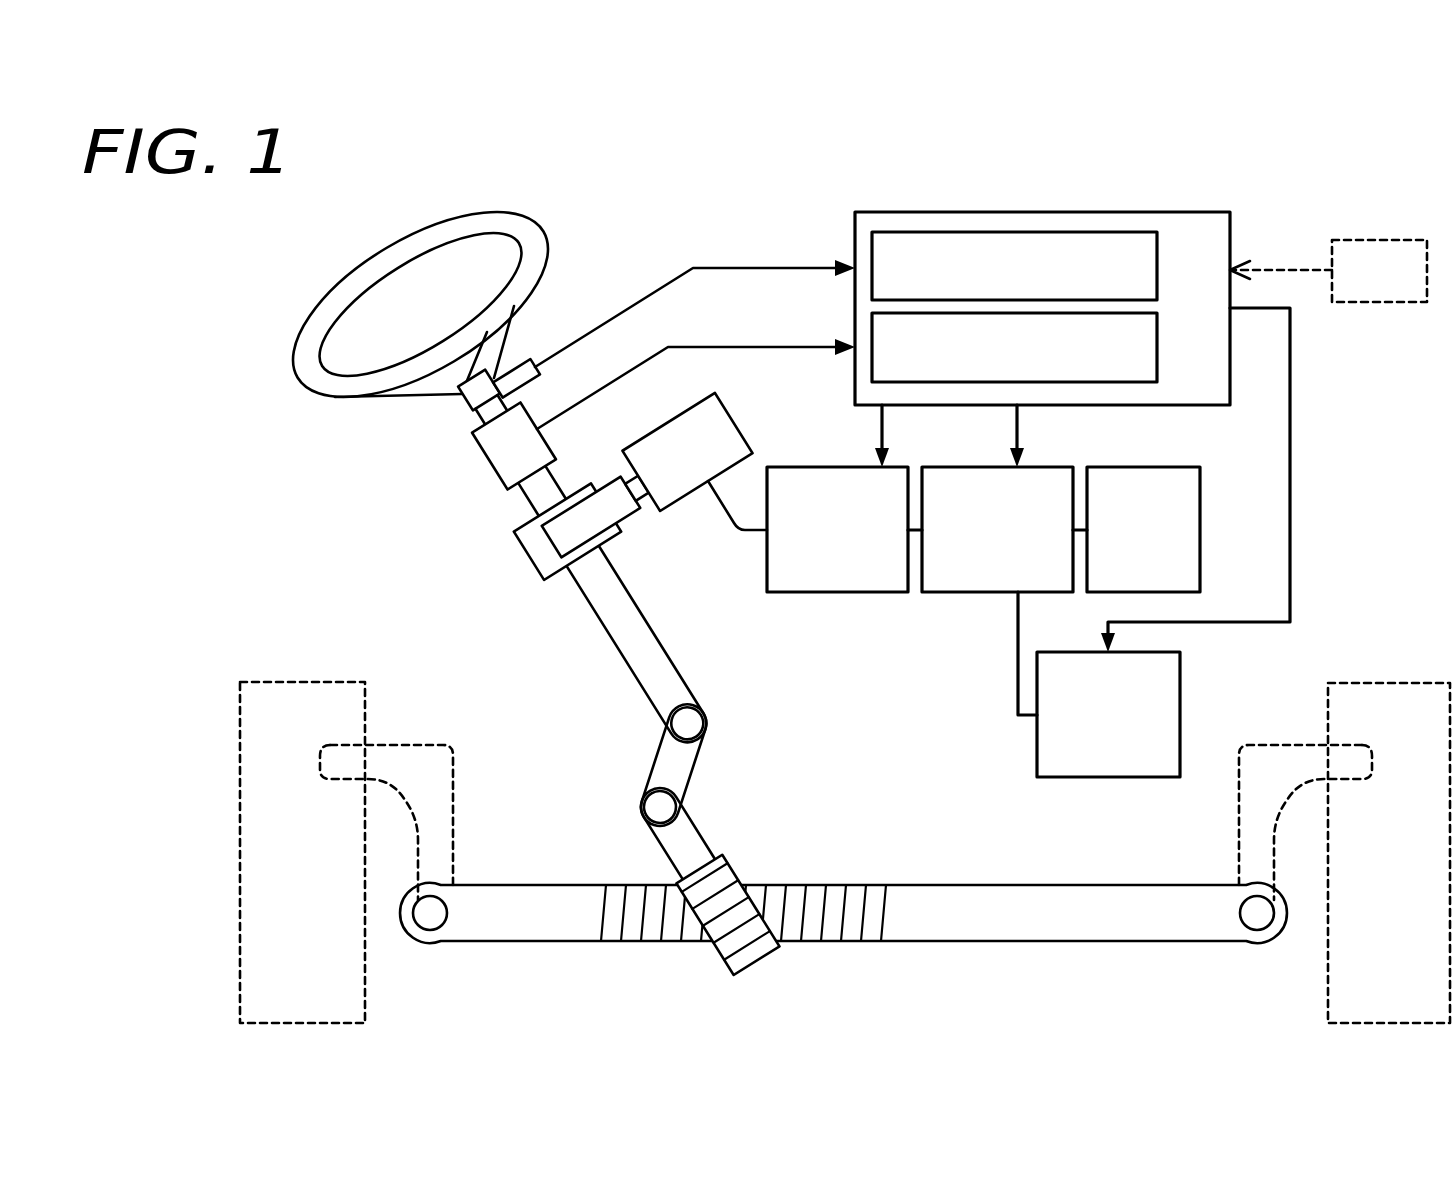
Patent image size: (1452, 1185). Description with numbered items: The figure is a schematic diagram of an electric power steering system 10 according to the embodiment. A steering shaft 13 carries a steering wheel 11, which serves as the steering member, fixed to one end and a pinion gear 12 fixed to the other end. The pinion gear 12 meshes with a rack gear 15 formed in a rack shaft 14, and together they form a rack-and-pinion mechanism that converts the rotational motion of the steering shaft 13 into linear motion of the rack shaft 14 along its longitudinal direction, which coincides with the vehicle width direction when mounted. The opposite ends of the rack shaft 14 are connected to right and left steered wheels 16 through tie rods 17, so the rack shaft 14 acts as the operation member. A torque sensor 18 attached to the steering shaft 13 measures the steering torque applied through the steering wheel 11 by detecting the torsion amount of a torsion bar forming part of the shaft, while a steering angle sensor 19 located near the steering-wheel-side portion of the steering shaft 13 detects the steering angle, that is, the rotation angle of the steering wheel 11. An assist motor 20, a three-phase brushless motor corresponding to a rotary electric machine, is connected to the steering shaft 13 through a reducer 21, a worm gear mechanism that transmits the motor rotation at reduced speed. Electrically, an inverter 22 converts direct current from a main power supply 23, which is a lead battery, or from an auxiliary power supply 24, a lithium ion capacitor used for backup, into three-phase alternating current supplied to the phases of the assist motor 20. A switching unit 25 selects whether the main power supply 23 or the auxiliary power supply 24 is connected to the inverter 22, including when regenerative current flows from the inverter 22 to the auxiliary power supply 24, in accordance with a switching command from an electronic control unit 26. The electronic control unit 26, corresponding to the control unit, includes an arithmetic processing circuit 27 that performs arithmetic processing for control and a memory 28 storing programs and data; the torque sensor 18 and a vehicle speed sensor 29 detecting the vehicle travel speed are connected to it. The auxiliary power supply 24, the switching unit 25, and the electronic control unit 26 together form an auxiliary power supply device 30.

The electric power steering system 10 is at (293, 242).
The steering wheel 11 is at (543, 229).
The pinion gear 12 is at (722, 871).
The steering shaft 13 is at (617, 649).
The rack shaft 14 is at (1043, 884).
The rack gear 15 is at (856, 897).
The steered wheels 16 is at (300, 682).
The tie rods 17 is at (456, 795).
The torque sensor 18 is at (485, 458).
The steering angle sensor 19 is at (514, 362).
The assist motor 20 is at (742, 428).
The reducer 21 is at (527, 560).
The inverter 22 is at (879, 594).
The main power supply 23 is at (1201, 530).
The auxiliary power supply 24 is at (1181, 715).
The switching unit 25 is at (1050, 467).
The electronic control unit 26 is at (1184, 212).
The arithmetic processing circuit 27 is at (1158, 264).
The memory 28 is at (1158, 344).
The vehicle speed sensor 29 is at (1375, 303).
The auxiliary power supply device 30 is at (975, 672).